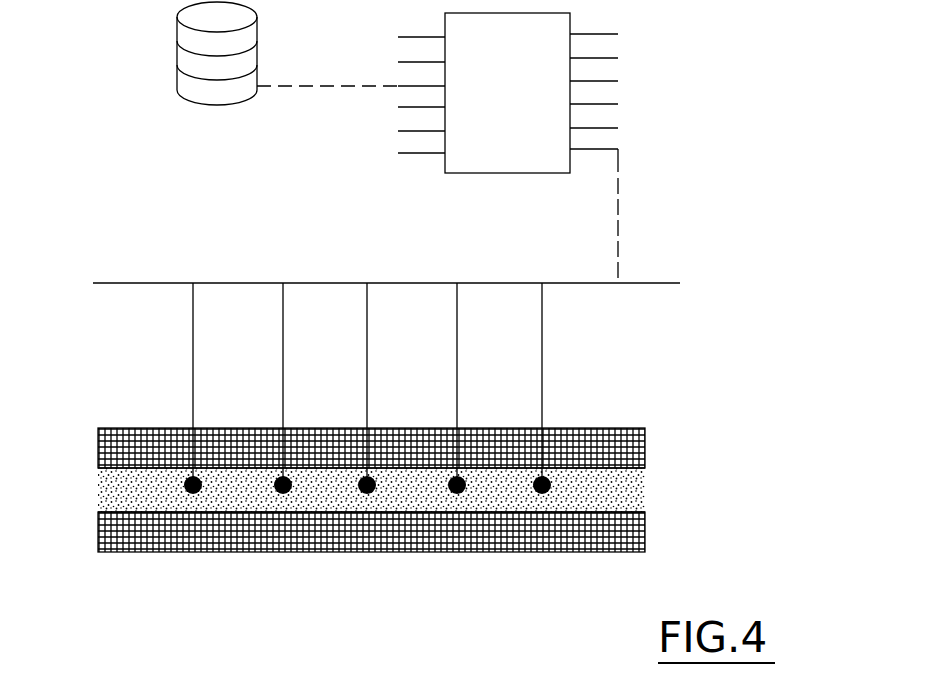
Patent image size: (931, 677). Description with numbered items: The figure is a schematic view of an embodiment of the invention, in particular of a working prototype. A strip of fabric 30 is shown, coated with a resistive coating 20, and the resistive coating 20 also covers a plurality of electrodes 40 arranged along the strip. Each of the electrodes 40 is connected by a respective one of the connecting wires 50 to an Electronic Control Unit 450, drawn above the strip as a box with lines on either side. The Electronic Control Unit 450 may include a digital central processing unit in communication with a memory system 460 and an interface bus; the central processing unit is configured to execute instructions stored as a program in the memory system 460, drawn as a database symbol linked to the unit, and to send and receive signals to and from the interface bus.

The memory system 460 is at (177, 50).
The Electronic Control Unit 450 is at (529, 107).
The connecting wires 50 is at (193, 342).
The electrodes 40 is at (165, 428).
The resistive coating 20 is at (620, 427).
The strip of fabric 30 is at (592, 553).